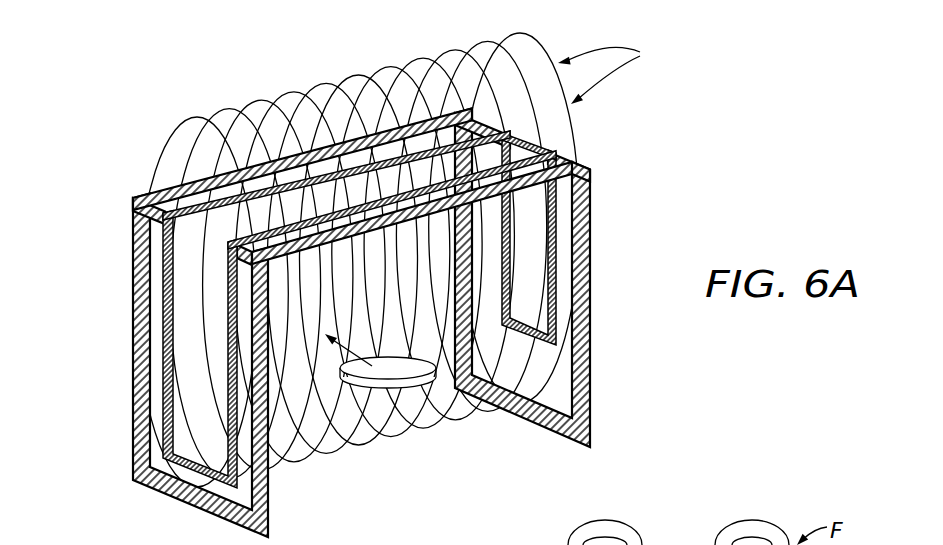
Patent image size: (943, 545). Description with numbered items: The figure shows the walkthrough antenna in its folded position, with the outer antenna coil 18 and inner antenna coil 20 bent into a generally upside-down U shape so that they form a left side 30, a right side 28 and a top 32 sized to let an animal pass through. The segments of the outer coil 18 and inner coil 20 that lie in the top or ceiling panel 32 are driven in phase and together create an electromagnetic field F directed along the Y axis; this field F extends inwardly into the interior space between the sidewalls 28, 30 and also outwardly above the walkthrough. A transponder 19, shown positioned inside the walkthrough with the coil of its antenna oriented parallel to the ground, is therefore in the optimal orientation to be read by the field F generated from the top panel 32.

The outer antenna coil 18 is at (158, 194).
The transponder 19 is at (393, 378).
The inner antenna coil 20 is at (163, 258).
The right side 28 is at (603, 184).
The left side 30 is at (118, 349).
The top 32 is at (323, 124).
The electromagnetic field F is at (610, 73).